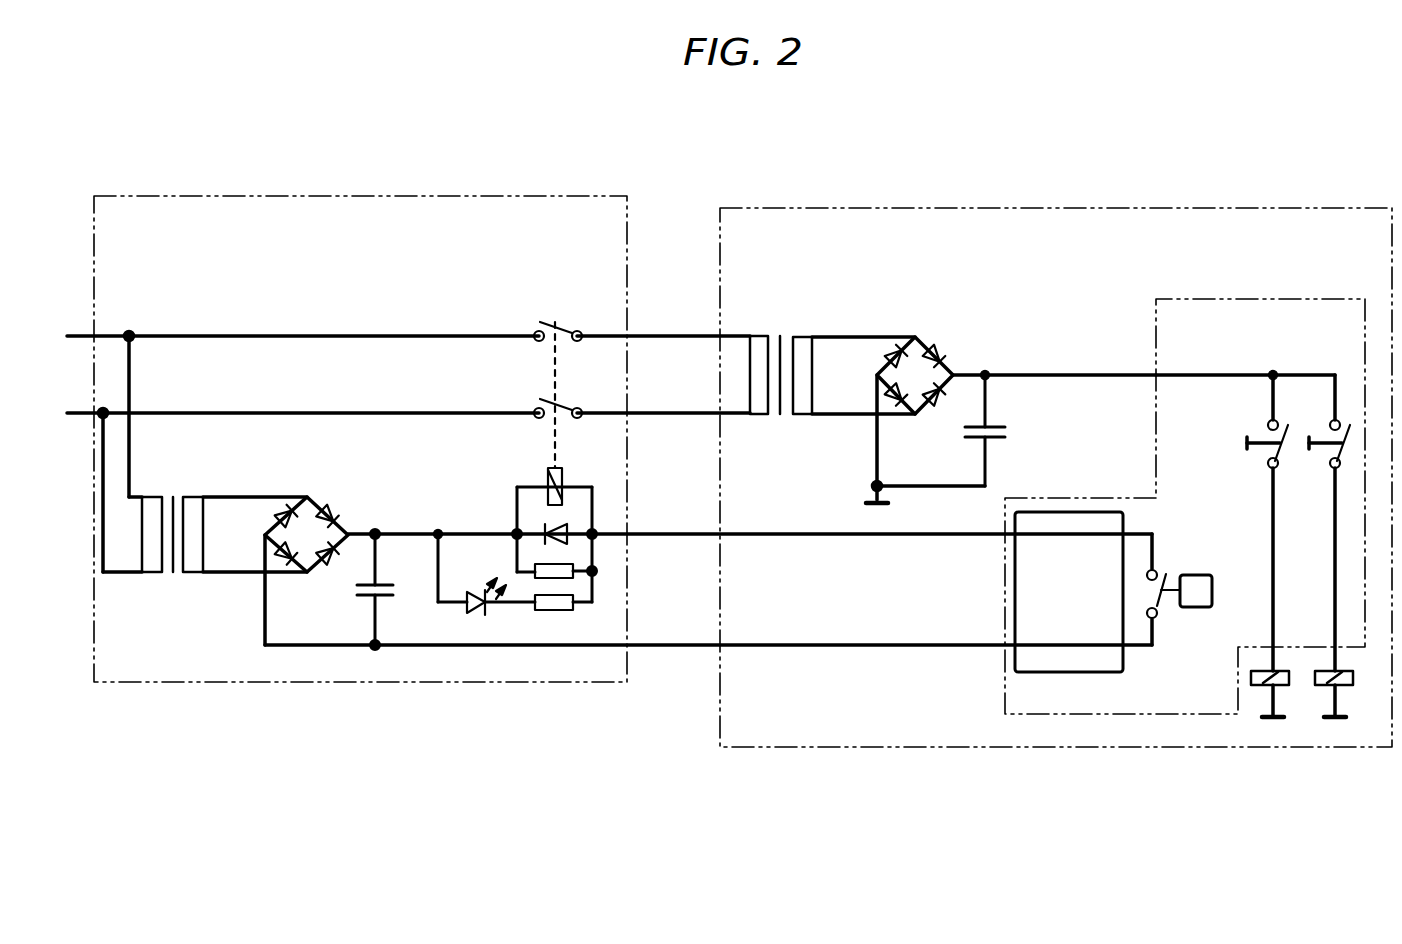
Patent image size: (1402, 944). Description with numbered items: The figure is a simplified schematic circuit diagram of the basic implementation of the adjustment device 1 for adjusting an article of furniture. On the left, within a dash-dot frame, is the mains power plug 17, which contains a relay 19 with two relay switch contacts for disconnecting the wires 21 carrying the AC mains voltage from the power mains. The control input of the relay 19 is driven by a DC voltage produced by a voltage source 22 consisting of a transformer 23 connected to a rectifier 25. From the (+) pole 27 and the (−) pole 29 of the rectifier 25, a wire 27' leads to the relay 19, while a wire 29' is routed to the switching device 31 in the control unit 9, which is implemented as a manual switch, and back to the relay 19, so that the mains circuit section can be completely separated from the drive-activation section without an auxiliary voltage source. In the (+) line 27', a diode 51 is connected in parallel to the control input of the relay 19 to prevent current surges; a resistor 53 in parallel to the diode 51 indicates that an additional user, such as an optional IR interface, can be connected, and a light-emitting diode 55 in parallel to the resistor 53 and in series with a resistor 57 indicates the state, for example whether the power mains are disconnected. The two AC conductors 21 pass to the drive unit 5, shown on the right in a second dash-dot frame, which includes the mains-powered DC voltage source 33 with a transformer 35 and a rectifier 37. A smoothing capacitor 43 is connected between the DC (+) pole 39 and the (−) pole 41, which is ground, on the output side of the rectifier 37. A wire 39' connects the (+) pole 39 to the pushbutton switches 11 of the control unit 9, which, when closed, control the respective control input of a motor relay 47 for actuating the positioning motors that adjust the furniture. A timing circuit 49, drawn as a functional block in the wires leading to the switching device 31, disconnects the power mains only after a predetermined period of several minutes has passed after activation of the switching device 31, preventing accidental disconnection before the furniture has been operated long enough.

The adjustment device 1 is at (806, 117).
The drive unit 5 is at (1133, 208).
The control unit 9 is at (1005, 691).
The pushbutton switches 11 is at (1323, 453).
The mains power plug 17 is at (337, 196).
The relay 19 is at (548, 480).
The wires carrying the AC mains voltage 21 is at (628, 336).
The voltage source 22 is at (200, 584).
The transformer 23 is at (152, 572).
The rectifier 25 is at (307, 572).
The (+) pole 27 is at (376, 568).
The wire 27' is at (750, 512).
The (−) pole 29 is at (224, 534).
The wire 29' is at (708, 633).
The switching device 31 is at (1196, 608).
The mains-powered DC voltage source 33 is at (806, 322).
The transformer 35 is at (757, 336).
The rectifier 37 is at (941, 298).
The DC (+) pole 39 is at (1054, 356).
The wire 39' is at (1245, 349).
The (−) pole 41 is at (877, 375).
The smoothing capacitor 43 is at (1010, 437).
The motor relay 47 is at (1286, 686).
The timing circuit 49 is at (1015, 598).
The diode 51 is at (567, 557).
The resistor 53 is at (577, 573).
The light-emitting diode 55 is at (484, 632).
The resistor 57 is at (550, 612).